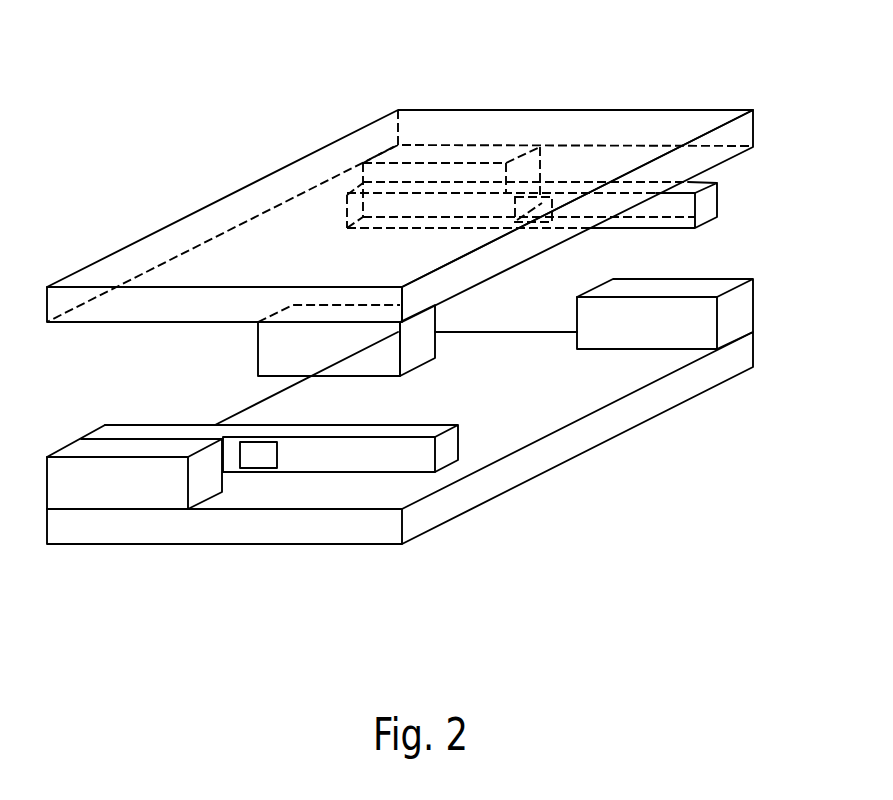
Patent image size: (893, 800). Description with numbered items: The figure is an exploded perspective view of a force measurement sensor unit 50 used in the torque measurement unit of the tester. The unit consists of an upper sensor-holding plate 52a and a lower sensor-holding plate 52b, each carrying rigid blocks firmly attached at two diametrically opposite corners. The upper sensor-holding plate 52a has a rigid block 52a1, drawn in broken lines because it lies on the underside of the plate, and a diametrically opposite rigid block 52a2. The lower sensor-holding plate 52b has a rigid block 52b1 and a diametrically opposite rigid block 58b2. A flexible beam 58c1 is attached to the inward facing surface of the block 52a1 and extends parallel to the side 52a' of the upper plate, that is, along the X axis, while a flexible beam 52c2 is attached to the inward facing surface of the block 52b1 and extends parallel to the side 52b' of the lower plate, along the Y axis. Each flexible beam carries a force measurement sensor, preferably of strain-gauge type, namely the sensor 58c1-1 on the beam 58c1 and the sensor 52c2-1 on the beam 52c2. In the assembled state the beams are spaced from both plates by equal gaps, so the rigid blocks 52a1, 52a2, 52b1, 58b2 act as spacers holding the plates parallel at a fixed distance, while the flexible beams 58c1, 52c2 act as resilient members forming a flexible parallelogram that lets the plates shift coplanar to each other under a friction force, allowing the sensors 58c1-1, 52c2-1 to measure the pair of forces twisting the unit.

The force sensor measurement unit 50 is at (499, 75).
The upper sensor-holding plate 52a is at (400, 175).
The side of the upper sensor-holding plate 52a' is at (400, 157).
The rigid block 52a1 is at (425, 163).
The rigid block 52a2 is at (297, 348).
The flexible beam 58c1 is at (703, 203).
The force measurement sensor 58c1-1 is at (540, 205).
The rigid block 58b2 is at (737, 305).
The lower sensor-holding plate 52b is at (423, 477).
The side of the lower sensor-holding plate 52b' is at (224, 566).
The rigid block 52b1 is at (108, 490).
The flexible beam 52c2 is at (445, 445).
The force measurement sensor 52c2-1 is at (264, 458).